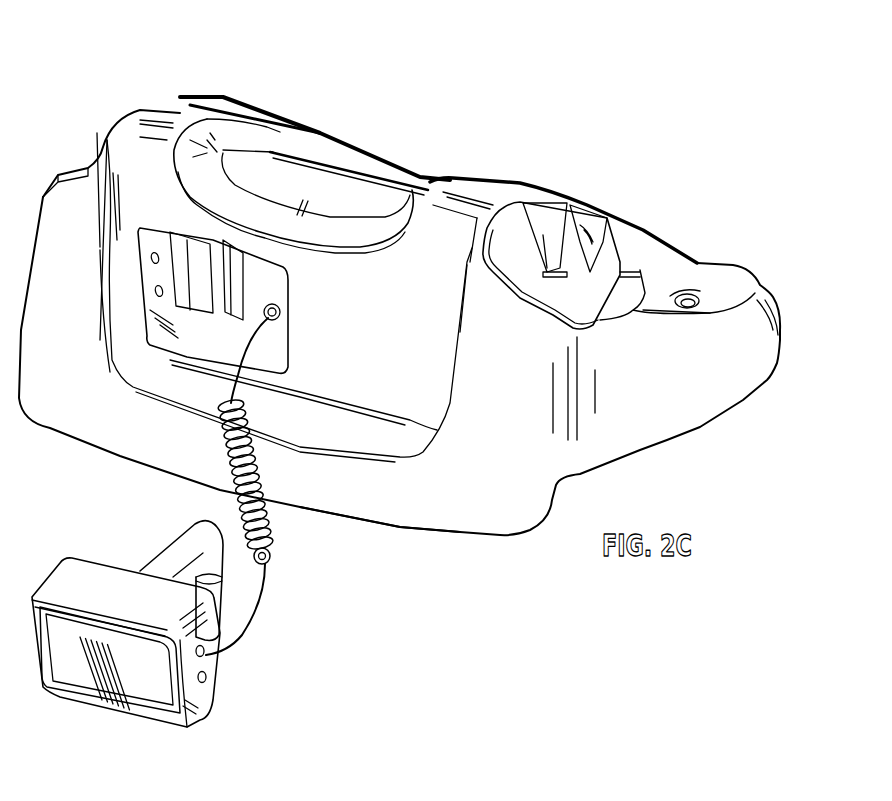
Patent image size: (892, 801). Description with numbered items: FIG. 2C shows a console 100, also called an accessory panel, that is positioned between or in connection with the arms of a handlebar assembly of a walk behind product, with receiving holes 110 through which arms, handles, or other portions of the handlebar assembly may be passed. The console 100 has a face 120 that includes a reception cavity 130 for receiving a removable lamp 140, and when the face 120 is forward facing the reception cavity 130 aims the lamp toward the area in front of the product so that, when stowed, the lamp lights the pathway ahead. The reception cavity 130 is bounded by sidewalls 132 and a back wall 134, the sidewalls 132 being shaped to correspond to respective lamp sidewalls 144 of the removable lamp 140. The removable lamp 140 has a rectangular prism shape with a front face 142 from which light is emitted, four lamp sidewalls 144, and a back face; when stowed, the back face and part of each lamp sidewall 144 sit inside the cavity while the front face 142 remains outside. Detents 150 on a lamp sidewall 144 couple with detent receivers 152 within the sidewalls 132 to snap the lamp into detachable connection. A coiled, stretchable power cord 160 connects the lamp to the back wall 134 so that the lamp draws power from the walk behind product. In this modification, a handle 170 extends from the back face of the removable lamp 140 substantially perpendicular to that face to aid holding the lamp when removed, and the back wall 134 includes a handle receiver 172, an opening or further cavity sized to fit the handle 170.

The console 100 is at (612, 85).
The receiving holes 110 is at (80, 164).
The face 120 is at (503, 498).
The reception cavity 130 is at (264, 265).
The sidewalls 132 is at (140, 248).
The back wall 134 is at (187, 238).
The removable lamp 140 is at (53, 556).
The front face 142 is at (117, 693).
The lamp sidewalls 144 is at (88, 570).
The detents 150 is at (206, 651).
The detent receivers 152 is at (156, 292).
The power cord 160 is at (274, 583).
The handle 170 is at (178, 550).
The handle receiver 172 is at (258, 255).